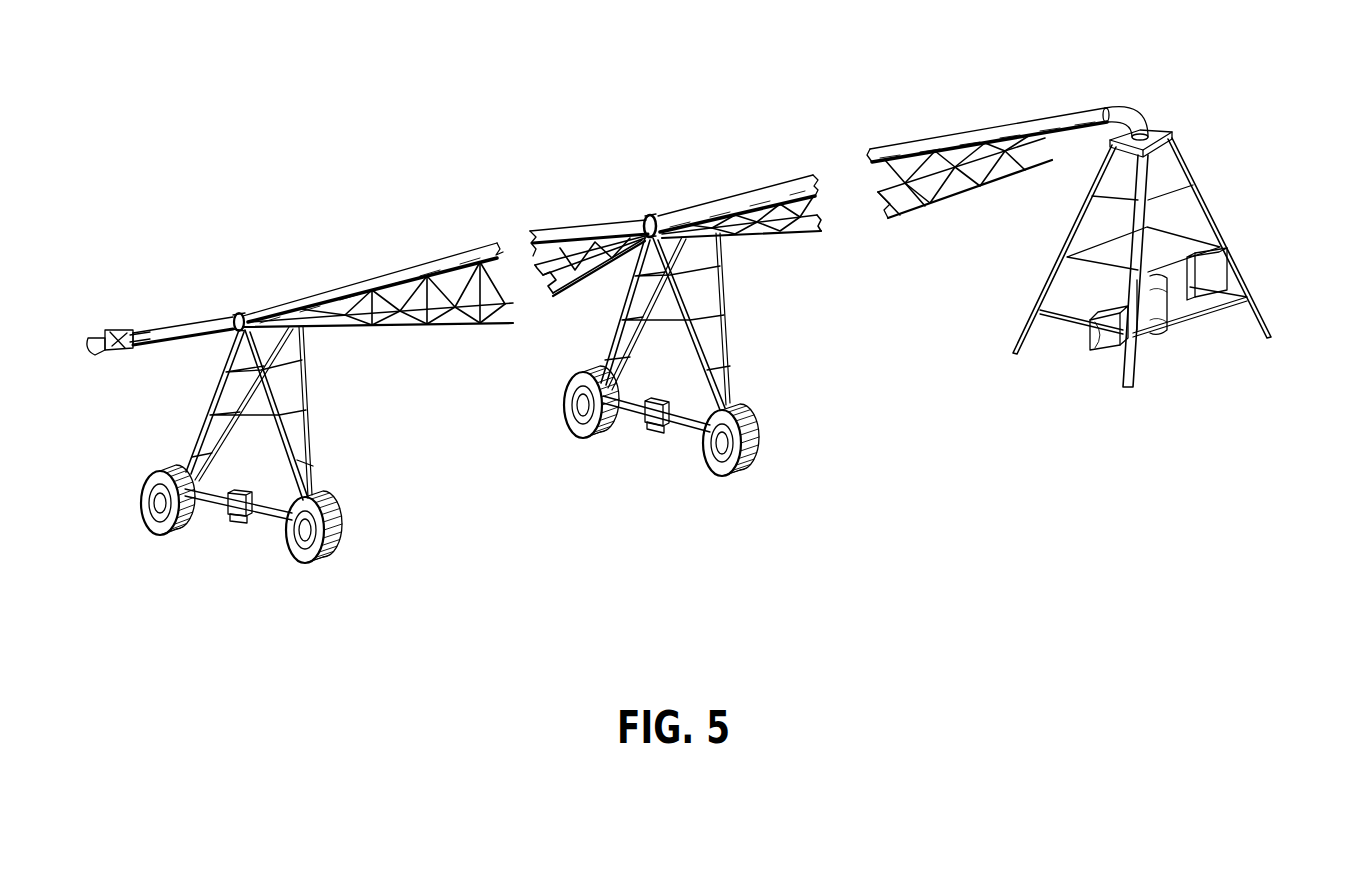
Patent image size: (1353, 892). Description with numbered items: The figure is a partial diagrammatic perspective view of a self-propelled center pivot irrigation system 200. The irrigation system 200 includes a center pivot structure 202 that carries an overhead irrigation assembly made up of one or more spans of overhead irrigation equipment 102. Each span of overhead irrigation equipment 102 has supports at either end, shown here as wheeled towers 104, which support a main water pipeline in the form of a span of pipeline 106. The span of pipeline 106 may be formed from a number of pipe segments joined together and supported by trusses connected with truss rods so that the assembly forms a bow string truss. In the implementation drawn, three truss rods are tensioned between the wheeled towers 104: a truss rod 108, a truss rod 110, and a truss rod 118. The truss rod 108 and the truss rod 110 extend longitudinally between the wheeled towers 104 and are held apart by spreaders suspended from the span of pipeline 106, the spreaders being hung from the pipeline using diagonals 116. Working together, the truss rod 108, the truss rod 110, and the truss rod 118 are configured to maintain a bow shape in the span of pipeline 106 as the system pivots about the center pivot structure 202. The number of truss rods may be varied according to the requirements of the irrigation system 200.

The self-propelled center pivot irrigation system 200 is at (208, 152).
The span of overhead irrigation equipment 102 is at (240, 287).
The wheeled tower 104 is at (324, 409).
The span of pipeline 106 is at (643, 205).
The truss rod 108 is at (410, 277).
The truss rod 110 is at (583, 292).
The diagonal 116 is at (463, 308).
The truss rod 118 is at (408, 328).
The center pivot structure 202 is at (1215, 213).